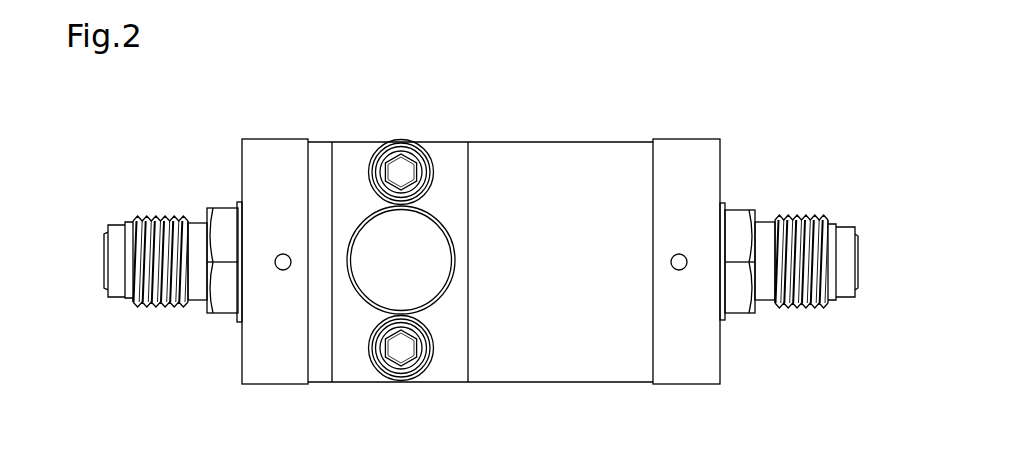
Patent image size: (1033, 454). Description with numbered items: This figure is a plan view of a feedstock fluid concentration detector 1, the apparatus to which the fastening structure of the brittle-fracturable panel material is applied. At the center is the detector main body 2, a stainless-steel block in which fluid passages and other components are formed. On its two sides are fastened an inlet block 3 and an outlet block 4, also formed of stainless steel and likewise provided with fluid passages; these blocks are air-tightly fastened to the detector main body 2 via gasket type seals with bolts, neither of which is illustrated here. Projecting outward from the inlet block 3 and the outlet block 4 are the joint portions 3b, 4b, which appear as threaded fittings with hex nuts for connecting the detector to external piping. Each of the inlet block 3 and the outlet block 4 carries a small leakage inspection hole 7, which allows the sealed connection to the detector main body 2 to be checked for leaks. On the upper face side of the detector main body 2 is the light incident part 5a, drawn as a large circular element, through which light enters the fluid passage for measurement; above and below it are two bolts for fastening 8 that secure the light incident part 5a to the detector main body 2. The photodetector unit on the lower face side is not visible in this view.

The feedstock fluid concentration detector 1 is at (758, 162).
The detector main body 2 is at (559, 170).
The inlet block 3 is at (273, 183).
The outlet block 4 is at (680, 182).
The joint portion 3b is at (157, 215).
The joint portion 4b is at (807, 215).
The light incident part 5a is at (401, 260).
The leakage inspection hole 7 is at (283, 270).
The bolt for fastening 8 is at (401, 172).